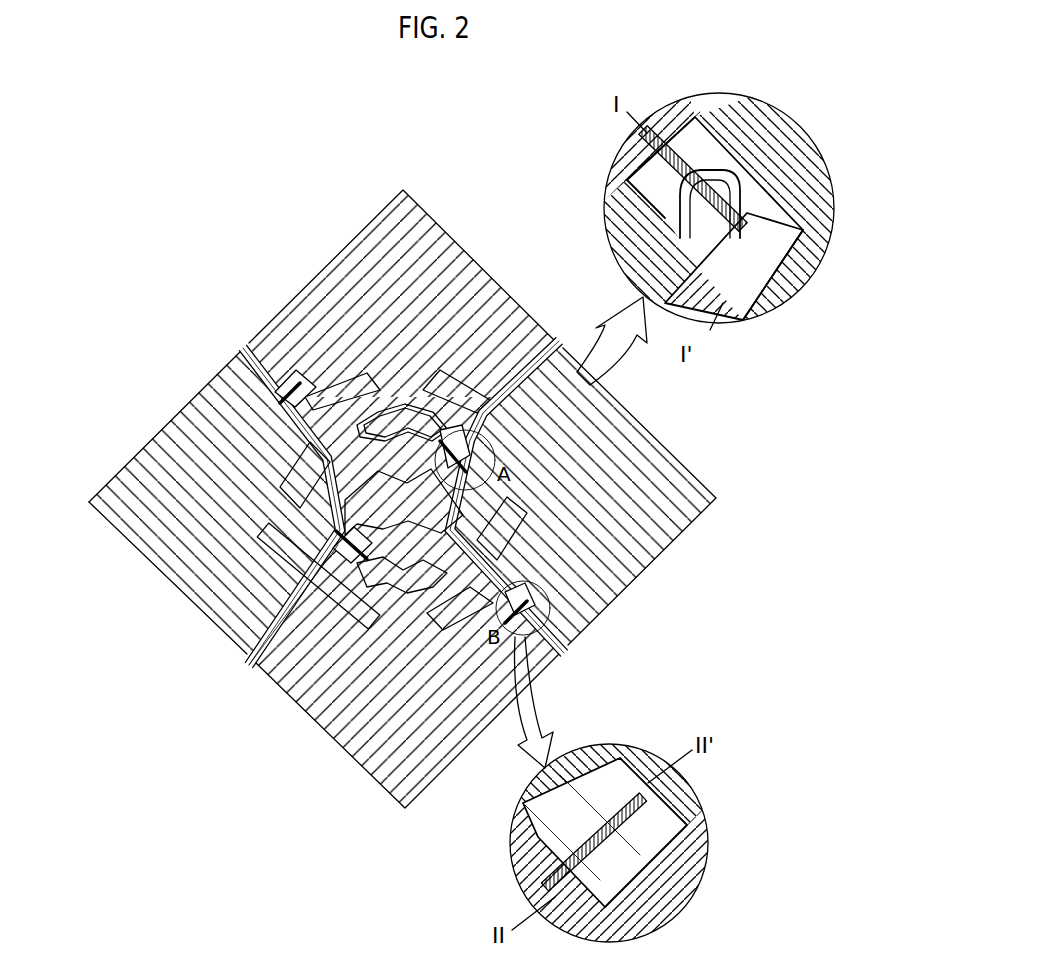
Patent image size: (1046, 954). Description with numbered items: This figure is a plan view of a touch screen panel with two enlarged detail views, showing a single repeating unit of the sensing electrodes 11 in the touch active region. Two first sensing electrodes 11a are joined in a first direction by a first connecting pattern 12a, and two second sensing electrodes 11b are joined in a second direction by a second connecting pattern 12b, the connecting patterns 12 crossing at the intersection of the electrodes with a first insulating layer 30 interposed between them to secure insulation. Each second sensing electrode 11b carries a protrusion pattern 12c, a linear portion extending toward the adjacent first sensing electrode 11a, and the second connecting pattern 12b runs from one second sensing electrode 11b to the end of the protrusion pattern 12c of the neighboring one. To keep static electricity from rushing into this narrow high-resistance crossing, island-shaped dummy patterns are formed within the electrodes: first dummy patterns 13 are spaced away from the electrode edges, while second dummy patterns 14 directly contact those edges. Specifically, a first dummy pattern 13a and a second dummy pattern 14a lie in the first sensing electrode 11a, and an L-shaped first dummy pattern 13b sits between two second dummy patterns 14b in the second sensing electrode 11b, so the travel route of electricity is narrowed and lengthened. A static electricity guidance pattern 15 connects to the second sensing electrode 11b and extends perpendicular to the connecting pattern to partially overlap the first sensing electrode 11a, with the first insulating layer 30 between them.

The sensing electrodes 11 is at (180, 262).
The first sensing electrode 11a is at (211, 378).
The second sensing electrode 11b is at (287, 310).
The connecting patterns 12 is at (558, 371).
The first connecting pattern 12a is at (450, 515).
The second connecting pattern 12b is at (455, 432).
The protrusion pattern 12c is at (425, 505).
The first dummy patterns 13 is at (397, 271).
The first dummy pattern 13a is at (330, 420).
The first dummy pattern 13b is at (408, 400).
The second dummy patterns 14 is at (240, 550).
The second dummy pattern 14a is at (282, 567).
The second dummy pattern 14b is at (268, 667).
The static electricity guidance pattern 15 is at (538, 608).
The first insulating layer 30 is at (730, 158).